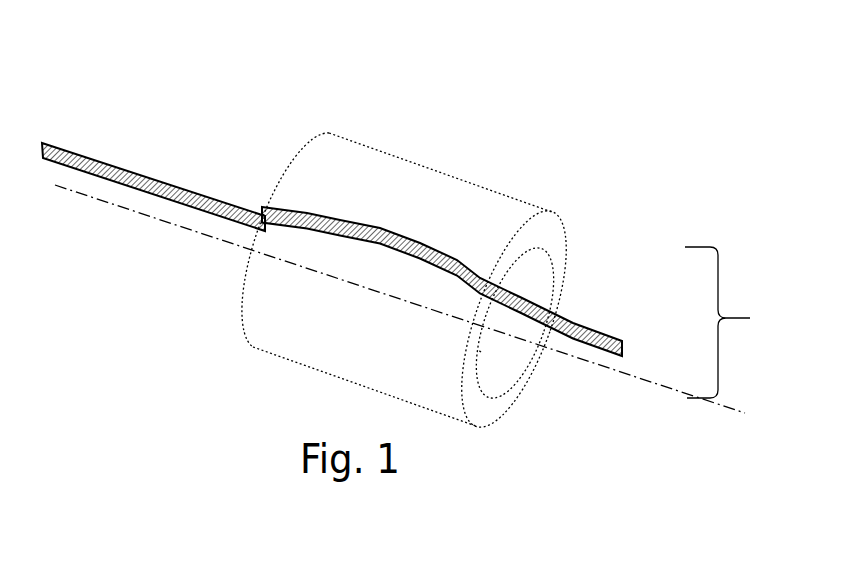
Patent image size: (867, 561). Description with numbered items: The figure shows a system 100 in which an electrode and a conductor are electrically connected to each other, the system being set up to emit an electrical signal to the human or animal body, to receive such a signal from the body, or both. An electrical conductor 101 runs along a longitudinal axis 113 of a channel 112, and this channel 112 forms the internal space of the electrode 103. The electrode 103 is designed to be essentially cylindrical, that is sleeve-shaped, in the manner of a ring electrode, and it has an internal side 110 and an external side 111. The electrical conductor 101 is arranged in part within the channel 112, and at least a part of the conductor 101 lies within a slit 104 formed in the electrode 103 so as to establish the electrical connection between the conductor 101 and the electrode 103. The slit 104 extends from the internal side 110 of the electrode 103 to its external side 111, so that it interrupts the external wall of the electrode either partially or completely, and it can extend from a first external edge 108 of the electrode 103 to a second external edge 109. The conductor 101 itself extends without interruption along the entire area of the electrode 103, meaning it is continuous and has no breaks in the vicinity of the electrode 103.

The system 100 is at (397, 122).
The electrical conductor 101 is at (105, 163).
The electrode 103 is at (452, 208).
The slit 104 is at (378, 250).
The first external edge 108 is at (250, 265).
The second external edge 109 is at (478, 350).
The internal side 110 is at (537, 266).
The external side 111 is at (520, 200).
The channel 112 is at (744, 322).
The longitudinal axis 113 is at (142, 217).